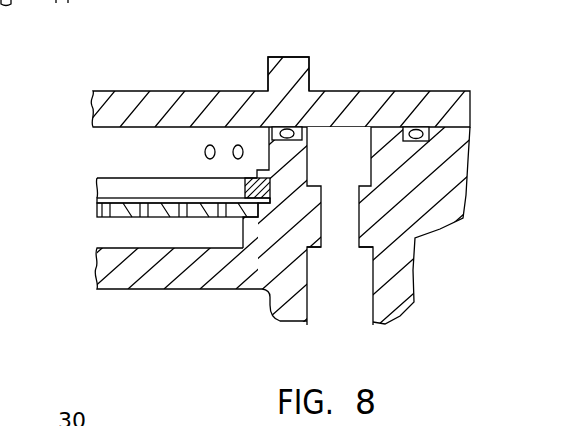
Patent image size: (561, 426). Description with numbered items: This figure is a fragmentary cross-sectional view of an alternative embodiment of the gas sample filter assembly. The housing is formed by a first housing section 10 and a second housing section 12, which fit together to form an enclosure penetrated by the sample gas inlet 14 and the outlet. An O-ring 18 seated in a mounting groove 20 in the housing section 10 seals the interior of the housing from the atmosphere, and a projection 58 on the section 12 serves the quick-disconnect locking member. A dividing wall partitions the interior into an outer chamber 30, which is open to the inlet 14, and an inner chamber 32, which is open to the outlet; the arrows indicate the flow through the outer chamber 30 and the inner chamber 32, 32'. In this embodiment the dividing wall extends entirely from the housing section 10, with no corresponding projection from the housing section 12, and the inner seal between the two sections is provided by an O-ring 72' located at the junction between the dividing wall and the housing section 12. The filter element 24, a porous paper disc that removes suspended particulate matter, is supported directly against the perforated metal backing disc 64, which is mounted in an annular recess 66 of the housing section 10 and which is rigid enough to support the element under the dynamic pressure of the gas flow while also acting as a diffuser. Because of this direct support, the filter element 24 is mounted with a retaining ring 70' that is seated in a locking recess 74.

The first housing section 10 is at (173, 289).
The second housing section 12 is at (167, 91).
The sample gas inlet 14 is at (328, 298).
The O-ring 18 is at (418, 127).
The mounting groove 20 is at (418, 142).
The filter element 24 is at (112, 195).
The outer chamber 30 is at (348, 126).
The inner chamber 32 is at (141, 90).
The flow direction 32' is at (146, 288).
The projection 58 is at (309, 73).
The perforated metal backing disc 64 is at (117, 218).
The annular recess 66 is at (248, 207).
The retaining ring 70' is at (190, 155).
The O-ring 72' is at (266, 87).
The locking recess 74 is at (270, 197).